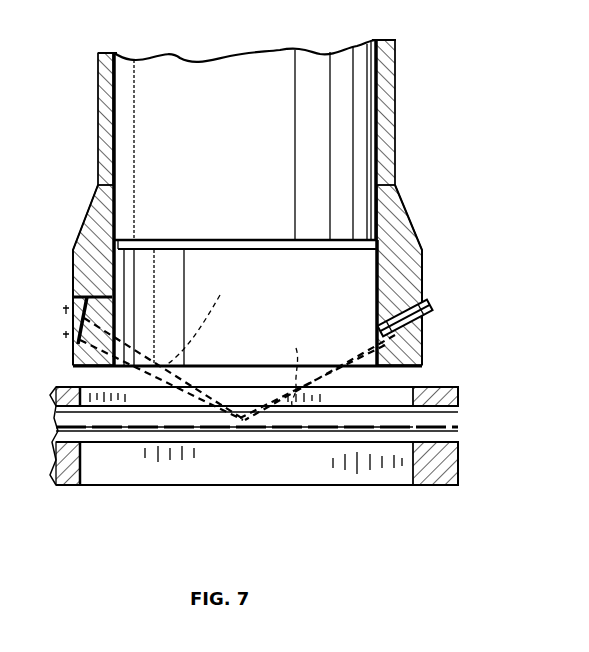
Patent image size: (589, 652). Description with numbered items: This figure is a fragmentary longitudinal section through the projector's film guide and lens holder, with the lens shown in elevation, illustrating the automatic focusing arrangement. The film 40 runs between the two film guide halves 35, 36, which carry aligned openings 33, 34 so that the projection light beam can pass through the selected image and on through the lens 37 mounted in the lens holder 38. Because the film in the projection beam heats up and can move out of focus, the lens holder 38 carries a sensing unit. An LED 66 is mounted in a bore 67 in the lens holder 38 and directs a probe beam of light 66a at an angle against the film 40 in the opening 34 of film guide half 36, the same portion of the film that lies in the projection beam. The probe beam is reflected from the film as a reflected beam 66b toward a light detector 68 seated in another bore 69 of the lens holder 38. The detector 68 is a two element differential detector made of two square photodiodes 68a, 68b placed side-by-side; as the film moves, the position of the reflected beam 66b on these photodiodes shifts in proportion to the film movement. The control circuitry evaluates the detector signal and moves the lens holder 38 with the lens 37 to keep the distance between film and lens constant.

The opening 33 is at (100, 478).
The opening 34 is at (56, 412).
The film guide half 35 is at (70, 478).
The film guide half 36 is at (56, 388).
The lens 37 is at (360, 150).
The lens holder 38 is at (410, 270).
The film 40 is at (316, 430).
The LED 66 is at (420, 330).
The probe beam of light 66a is at (317, 372).
The reflected beam 66b is at (222, 300).
The bore 67 is at (398, 364).
The light detector 68 is at (70, 294).
The photodiode 68a is at (92, 370).
The photodiode 68b is at (74, 264).
The bore 69 is at (90, 216).